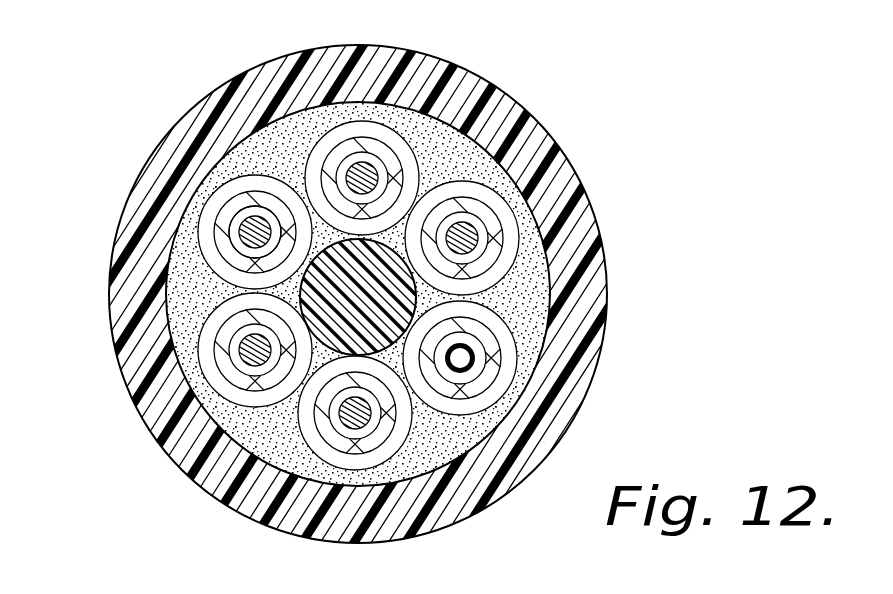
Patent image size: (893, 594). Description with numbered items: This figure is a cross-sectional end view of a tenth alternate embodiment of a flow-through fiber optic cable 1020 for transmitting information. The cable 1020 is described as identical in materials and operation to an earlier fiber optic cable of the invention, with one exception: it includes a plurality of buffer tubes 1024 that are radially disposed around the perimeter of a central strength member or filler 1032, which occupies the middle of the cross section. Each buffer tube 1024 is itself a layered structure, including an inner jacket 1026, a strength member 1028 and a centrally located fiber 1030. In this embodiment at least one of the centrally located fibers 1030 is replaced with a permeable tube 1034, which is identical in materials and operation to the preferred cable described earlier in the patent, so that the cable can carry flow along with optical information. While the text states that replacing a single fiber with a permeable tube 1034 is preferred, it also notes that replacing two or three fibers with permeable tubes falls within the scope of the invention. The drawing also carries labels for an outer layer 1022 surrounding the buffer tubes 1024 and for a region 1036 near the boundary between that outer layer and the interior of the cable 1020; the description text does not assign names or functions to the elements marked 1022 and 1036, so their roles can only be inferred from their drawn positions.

The fiber optic cable 1020 is at (484, 72).
The outer jacket 1022 is at (583, 175).
The buffer tube 1024 is at (333, 120).
The inner jacket 1026 is at (222, 195).
The strength member 1028 is at (232, 250).
The centrally located fiber 1030 is at (222, 375).
The central strength member or filler 1032 is at (298, 400).
The permeable tube 1034 is at (464, 355).
The binder tape 1036 is at (420, 463).